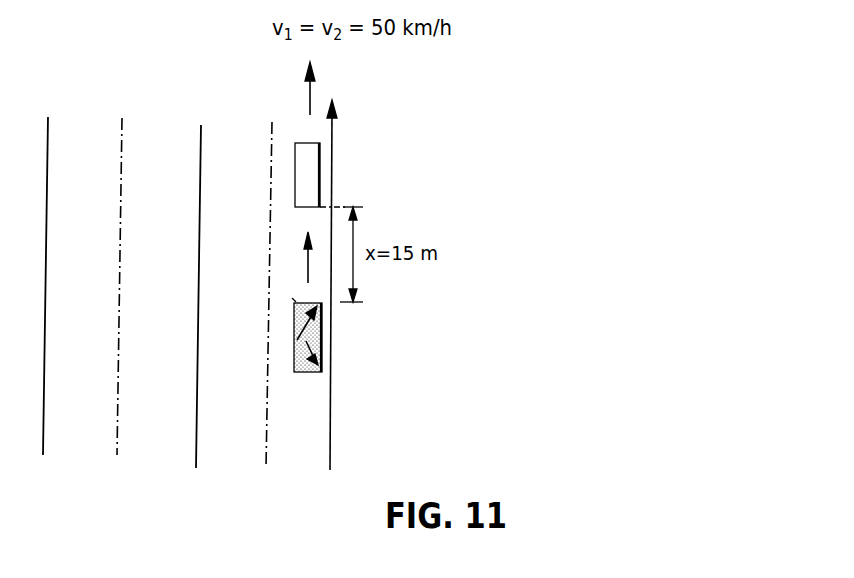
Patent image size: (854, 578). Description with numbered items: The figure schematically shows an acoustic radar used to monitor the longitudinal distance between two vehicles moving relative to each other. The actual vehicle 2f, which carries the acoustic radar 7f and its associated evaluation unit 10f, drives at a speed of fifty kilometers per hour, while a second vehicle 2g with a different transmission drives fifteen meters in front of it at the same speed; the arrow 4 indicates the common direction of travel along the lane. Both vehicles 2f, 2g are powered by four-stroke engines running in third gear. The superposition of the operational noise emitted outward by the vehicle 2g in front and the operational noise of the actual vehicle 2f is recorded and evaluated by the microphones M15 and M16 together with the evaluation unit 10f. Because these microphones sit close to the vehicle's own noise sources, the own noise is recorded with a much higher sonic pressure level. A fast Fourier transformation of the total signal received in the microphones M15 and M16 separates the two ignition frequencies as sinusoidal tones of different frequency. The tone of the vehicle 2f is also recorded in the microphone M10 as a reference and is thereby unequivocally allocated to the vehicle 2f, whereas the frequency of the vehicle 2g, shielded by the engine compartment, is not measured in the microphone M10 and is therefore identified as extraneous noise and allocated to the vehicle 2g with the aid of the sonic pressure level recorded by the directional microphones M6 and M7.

The direction of travel 4 is at (310, 97).
The second vehicle 2g is at (320, 175).
The vehicle 2f is at (322, 350).
The acoustic radar 7f is at (371, 394).
The evaluation unit 10f is at (318, 366).
The directional microphone M6 is at (257, 248).
The microphone M15 is at (297, 303).
The directional microphone M7 is at (264, 342).
The microphone M16 is at (297, 340).
The microphone M10 is at (306, 341).